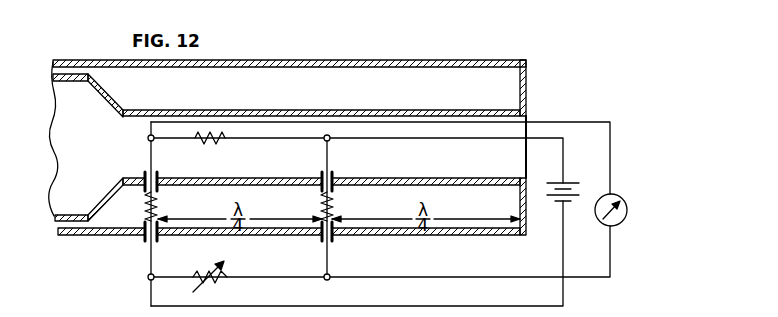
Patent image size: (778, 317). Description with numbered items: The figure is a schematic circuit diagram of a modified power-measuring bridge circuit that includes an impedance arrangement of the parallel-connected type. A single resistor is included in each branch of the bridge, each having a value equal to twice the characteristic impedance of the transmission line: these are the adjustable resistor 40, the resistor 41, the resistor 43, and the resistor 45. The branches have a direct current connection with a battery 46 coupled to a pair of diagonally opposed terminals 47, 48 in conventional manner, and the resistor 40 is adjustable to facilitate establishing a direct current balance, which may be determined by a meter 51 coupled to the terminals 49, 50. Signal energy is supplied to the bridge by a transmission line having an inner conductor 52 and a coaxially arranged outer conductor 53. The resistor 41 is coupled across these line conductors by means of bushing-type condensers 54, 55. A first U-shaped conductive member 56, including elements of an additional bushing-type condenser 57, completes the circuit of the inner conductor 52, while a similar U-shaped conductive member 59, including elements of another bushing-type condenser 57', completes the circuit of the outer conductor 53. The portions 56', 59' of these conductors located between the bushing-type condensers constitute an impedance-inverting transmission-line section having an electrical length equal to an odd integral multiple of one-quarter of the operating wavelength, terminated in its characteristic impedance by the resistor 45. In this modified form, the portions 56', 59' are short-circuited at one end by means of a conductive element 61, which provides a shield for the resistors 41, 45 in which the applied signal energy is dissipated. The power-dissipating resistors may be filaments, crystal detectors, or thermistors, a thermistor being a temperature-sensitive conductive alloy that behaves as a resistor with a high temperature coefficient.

The resistor 40 is at (215, 278).
The resistor 41 is at (159, 199).
The resistor 43 is at (225, 139).
The resistor 45 is at (335, 204).
The battery 46 is at (577, 183).
The terminal 47 is at (329, 140).
The terminal 48 is at (148, 277).
The terminal 49 is at (148, 138).
The terminal 50 is at (330, 280).
The meter 51 is at (597, 217).
The inner conductor 52 is at (53, 151).
The outer conductor 53 is at (58, 229).
The bushing-type condenser 54 is at (158, 240).
The bushing-type condenser 55 is at (157, 168).
The U-shaped conductive member 56 is at (239, 171).
The conductor portion 56' is at (426, 171).
The bushing-type condenser 57 is at (345, 174).
The bushing-type condenser 57' is at (347, 240).
The U-shaped conductive member 59 is at (239, 243).
The conductor portion 59' is at (426, 243).
The conductive element 61 is at (527, 74).